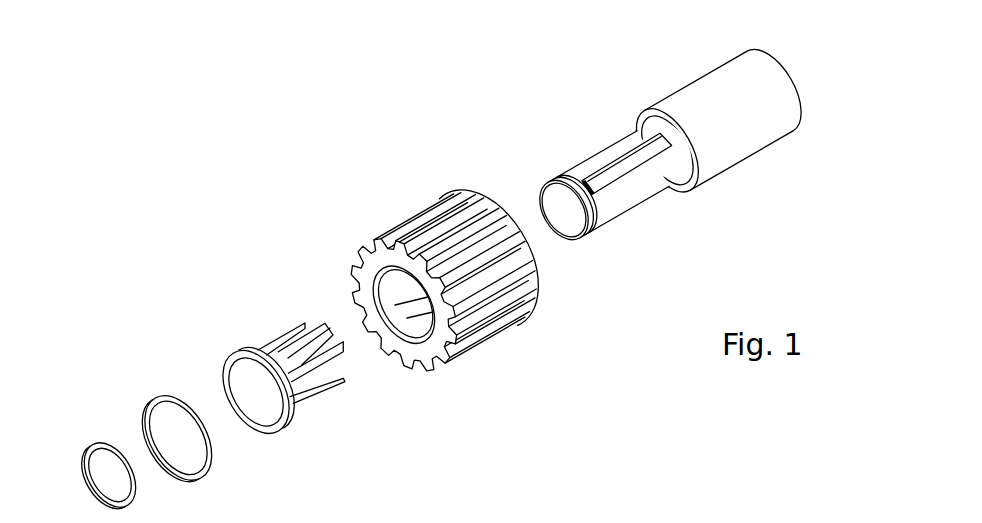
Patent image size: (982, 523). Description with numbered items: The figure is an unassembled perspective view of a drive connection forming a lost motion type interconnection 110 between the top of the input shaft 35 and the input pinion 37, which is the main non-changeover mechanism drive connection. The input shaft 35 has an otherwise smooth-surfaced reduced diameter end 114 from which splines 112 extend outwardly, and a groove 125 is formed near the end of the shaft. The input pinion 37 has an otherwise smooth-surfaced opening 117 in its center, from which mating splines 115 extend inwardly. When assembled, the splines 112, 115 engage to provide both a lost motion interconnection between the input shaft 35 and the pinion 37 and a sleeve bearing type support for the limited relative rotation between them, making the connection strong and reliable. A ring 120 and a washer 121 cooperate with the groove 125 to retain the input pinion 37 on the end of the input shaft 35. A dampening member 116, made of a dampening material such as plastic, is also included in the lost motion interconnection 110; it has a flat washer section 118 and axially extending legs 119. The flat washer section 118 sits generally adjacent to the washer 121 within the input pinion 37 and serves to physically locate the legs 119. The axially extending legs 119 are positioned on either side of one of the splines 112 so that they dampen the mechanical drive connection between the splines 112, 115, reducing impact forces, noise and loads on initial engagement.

The lost motion interconnection 110 is at (532, 81).
The input shaft 35 is at (766, 104).
The splines 112 is at (620, 199).
The reduced diameter end 114 is at (627, 163).
The groove 125 is at (580, 201).
The input pinion 37 is at (423, 281).
The opening 117 is at (403, 304).
The mating splines 115 is at (404, 318).
The dampening member 116 is at (258, 253).
The flat washer section 118 is at (228, 358).
The axially extending legs 119 is at (327, 397).
The washer 121 is at (155, 400).
The ring 120 is at (86, 447).